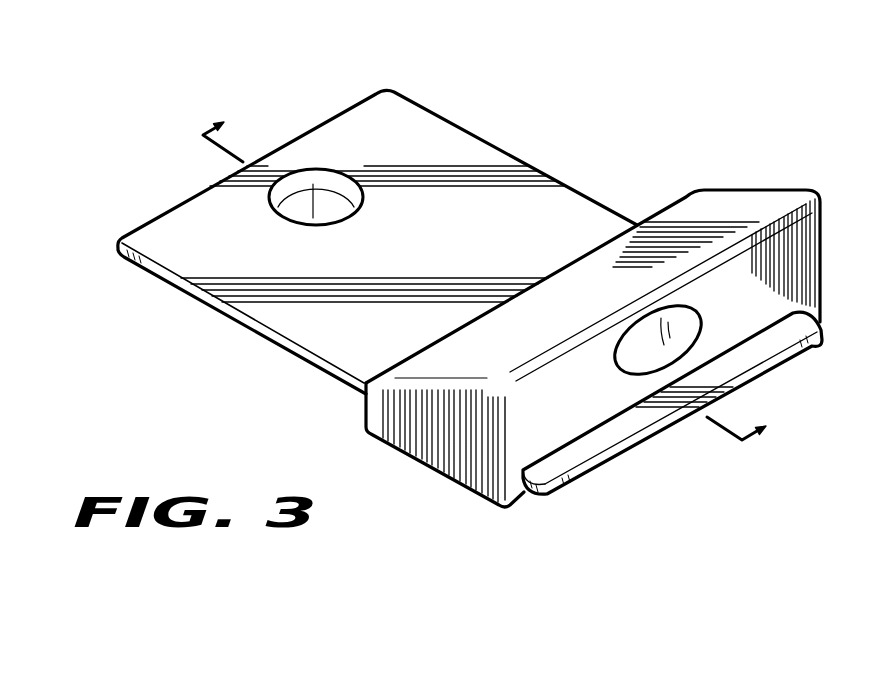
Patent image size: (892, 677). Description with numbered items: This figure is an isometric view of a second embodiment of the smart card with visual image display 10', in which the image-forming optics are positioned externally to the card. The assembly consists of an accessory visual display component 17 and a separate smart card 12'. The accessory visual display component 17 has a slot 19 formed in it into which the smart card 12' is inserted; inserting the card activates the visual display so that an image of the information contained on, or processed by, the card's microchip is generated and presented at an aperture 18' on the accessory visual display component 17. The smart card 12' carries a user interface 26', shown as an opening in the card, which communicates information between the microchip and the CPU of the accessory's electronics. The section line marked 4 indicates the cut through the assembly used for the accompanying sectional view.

The smart card with visual image display 10' is at (470, 298).
The smart card 12' is at (377, 242).
The user interface 26' is at (324, 219).
The accessory visual display component 17 is at (745, 190).
The aperture 18' is at (678, 336).
The slot 19 is at (575, 441).
The section line 4- 4 is at (501, 269).